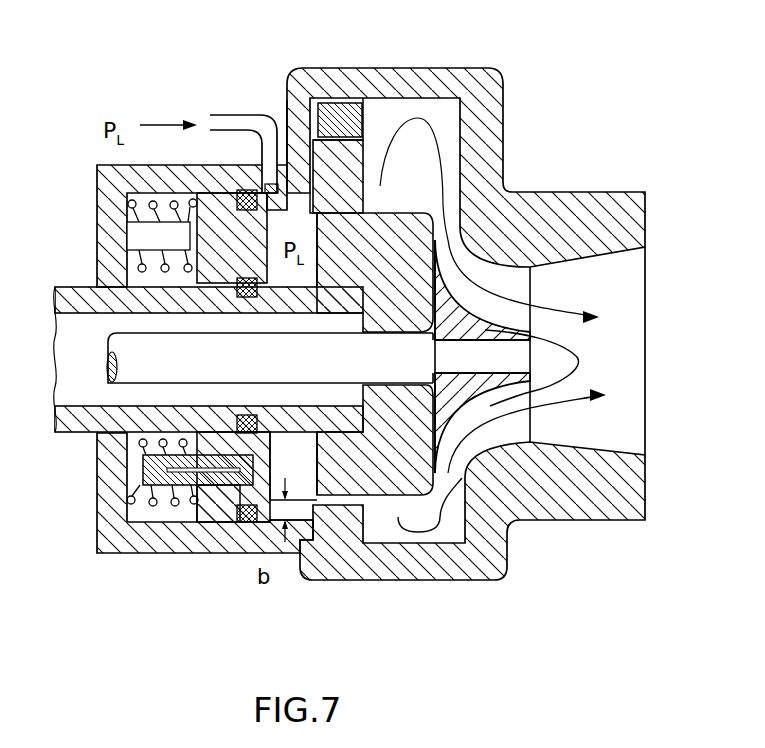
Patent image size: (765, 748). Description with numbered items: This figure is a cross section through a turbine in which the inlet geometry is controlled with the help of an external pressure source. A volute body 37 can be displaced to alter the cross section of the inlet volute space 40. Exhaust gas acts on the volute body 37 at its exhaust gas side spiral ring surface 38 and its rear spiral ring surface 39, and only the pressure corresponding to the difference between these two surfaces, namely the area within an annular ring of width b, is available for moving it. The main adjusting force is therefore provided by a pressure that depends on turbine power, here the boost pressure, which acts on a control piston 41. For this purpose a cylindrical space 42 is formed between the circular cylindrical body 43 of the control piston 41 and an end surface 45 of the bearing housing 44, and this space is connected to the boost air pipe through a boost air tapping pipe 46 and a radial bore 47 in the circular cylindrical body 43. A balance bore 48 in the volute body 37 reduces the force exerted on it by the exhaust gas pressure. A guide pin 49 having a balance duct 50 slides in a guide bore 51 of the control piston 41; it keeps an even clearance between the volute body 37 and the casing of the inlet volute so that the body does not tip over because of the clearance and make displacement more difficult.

The volute body 37 is at (347, 162).
The exhaust gas side spiral ring surface 38 is at (365, 165).
The rear spiral ring surface 39 is at (287, 110).
The inlet volute space 40 is at (424, 197).
The control piston 41 is at (222, 485).
The cylindrical space 42 is at (305, 461).
The circular cylindrical body 43 is at (227, 498).
The bearing housing 44 is at (380, 462).
The end surface 45 is at (317, 470).
The boost air tapping pipe 46 is at (223, 118).
The radial bore 47 is at (271, 190).
The balance bore 48 is at (336, 133).
The guide pin 49 is at (140, 473).
The balance duct 50 is at (197, 470).
The guide bore 51 is at (243, 483).